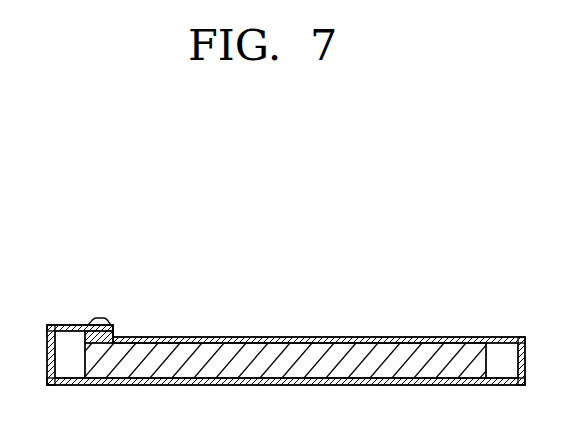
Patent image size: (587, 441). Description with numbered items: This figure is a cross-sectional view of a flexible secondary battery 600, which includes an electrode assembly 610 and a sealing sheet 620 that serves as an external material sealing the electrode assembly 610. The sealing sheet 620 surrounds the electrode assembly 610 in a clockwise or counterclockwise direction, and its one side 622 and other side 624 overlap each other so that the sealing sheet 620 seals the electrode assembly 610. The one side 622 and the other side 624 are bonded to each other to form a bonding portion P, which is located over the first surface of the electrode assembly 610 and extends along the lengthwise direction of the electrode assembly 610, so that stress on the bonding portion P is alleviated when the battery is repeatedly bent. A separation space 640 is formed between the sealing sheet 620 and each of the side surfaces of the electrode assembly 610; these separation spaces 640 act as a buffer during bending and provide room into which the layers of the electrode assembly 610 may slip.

The flexible secondary battery 600 is at (428, 270).
The electrode assembly 610 is at (203, 360).
The sealing sheet 620 is at (332, 337).
The one side 622 is at (112, 336).
The other side 624 is at (111, 325).
The separation space 640 is at (74, 356).
The bonding portion P is at (99, 316).